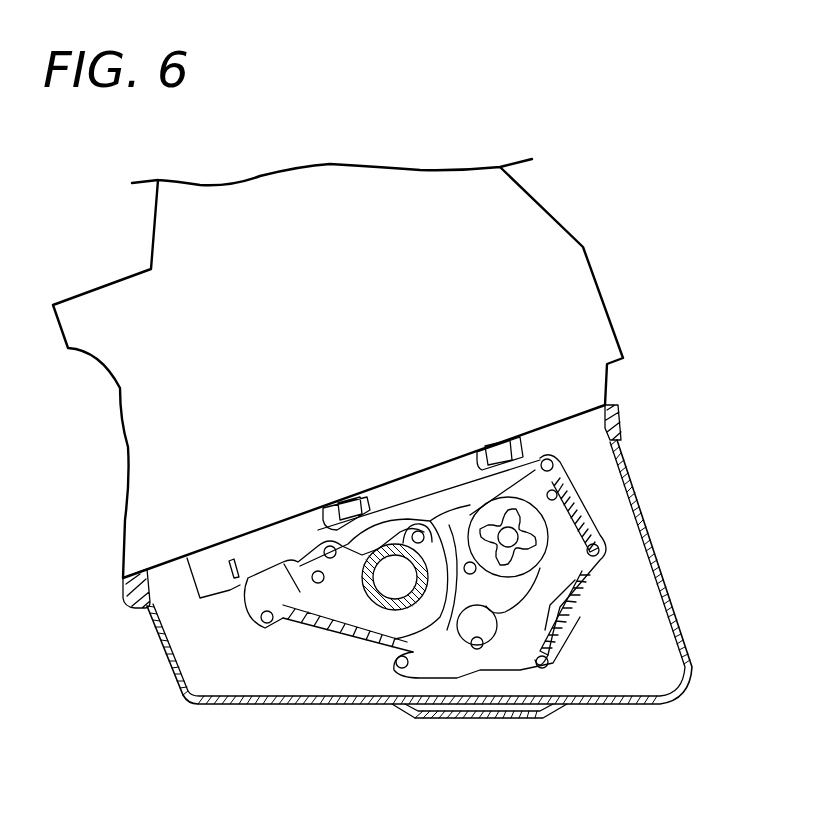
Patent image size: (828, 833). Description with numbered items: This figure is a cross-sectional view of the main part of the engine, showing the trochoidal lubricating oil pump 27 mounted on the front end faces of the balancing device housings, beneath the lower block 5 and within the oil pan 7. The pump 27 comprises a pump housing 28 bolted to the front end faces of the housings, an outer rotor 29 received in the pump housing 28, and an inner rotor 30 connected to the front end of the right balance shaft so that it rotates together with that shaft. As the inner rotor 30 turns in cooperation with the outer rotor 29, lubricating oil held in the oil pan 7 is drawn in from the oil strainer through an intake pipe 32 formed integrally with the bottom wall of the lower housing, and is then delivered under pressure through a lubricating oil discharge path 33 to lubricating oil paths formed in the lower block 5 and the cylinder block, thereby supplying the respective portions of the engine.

The lower block 5 is at (583, 293).
The oil pan 7 is at (672, 592).
The trochoidal lubricating oil pump 27 is at (582, 493).
The pump housing 28 is at (380, 657).
The outer rotor 29 is at (553, 575).
The inner rotor 30 is at (548, 533).
The intake pipe 32 is at (480, 645).
The lubricating oil discharge path 33 is at (247, 600).